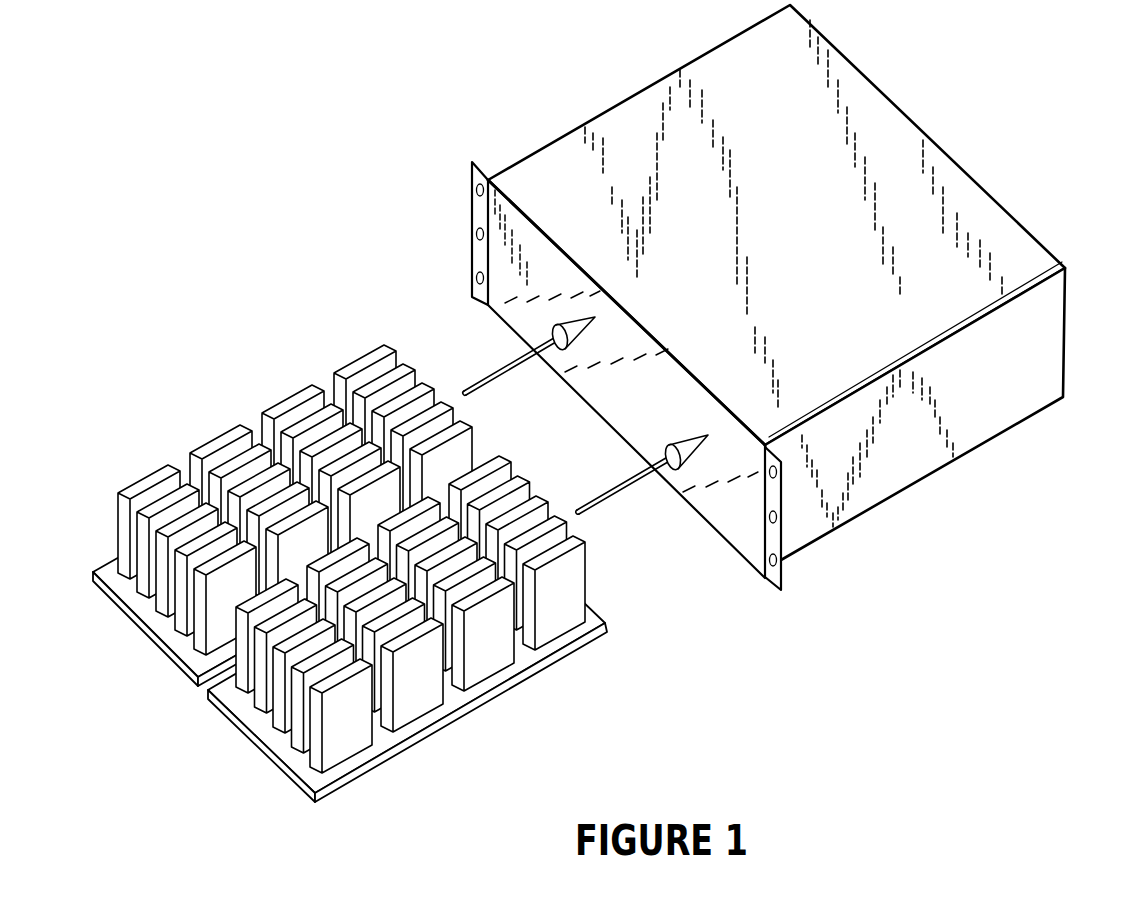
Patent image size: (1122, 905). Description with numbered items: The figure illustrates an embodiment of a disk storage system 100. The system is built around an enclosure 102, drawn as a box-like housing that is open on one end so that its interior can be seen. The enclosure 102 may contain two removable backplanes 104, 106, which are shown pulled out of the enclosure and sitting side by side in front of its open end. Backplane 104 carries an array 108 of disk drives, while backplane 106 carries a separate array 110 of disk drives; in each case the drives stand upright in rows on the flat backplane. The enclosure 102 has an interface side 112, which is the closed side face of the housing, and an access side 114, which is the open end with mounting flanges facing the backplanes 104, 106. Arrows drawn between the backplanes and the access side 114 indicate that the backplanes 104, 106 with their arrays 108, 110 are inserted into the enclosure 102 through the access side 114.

The disk storage system 100 is at (236, 241).
The enclosure 102 is at (774, 360).
The backplane 104 is at (142, 610).
The backplane 106 is at (250, 712).
The array of disk drives 108 is at (152, 474).
The array of disk drives 110 is at (420, 682).
The interface side of enclosure 112 is at (930, 139).
The access side of enclosure 114 is at (752, 525).